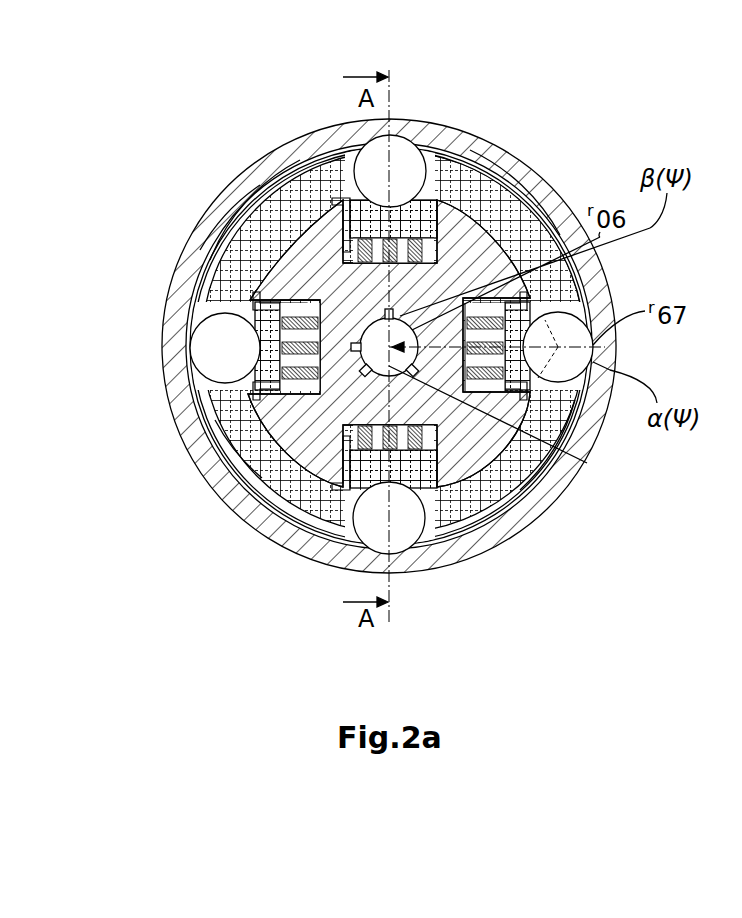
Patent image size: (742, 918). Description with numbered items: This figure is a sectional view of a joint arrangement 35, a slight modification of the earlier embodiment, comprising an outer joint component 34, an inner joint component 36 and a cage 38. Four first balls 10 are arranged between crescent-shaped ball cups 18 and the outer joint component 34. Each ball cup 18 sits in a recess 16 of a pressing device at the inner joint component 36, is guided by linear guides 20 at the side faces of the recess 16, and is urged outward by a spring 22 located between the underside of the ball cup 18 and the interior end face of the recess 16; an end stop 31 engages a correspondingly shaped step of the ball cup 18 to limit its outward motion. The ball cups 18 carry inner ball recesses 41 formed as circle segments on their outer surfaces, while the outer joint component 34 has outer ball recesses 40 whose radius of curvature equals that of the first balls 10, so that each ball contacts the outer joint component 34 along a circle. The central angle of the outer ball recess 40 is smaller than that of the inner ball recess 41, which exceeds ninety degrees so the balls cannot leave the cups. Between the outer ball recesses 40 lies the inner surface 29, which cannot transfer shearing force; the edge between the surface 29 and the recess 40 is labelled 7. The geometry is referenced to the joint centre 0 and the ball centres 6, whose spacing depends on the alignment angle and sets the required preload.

The joint arrangement 35 is at (156, 140).
The outer joint component 34 is at (483, 163).
The outer ball recess 40 is at (418, 131).
The inner surface 29 is at (250, 176).
The recess 16 is at (272, 225).
The inner joint component 36 is at (222, 260).
The inner ball recess 41 is at (262, 353).
The ball cup 18 is at (195, 410).
The spring 22 is at (257, 387).
The end stop 31 is at (262, 405).
The linear guide 20 is at (257, 470).
The first ball 10 is at (378, 158).
The cage 38 is at (510, 222).
The edge 7 is at (520, 382).
The ball centre 6 is at (585, 413).
The joint centre 0 is at (515, 538).